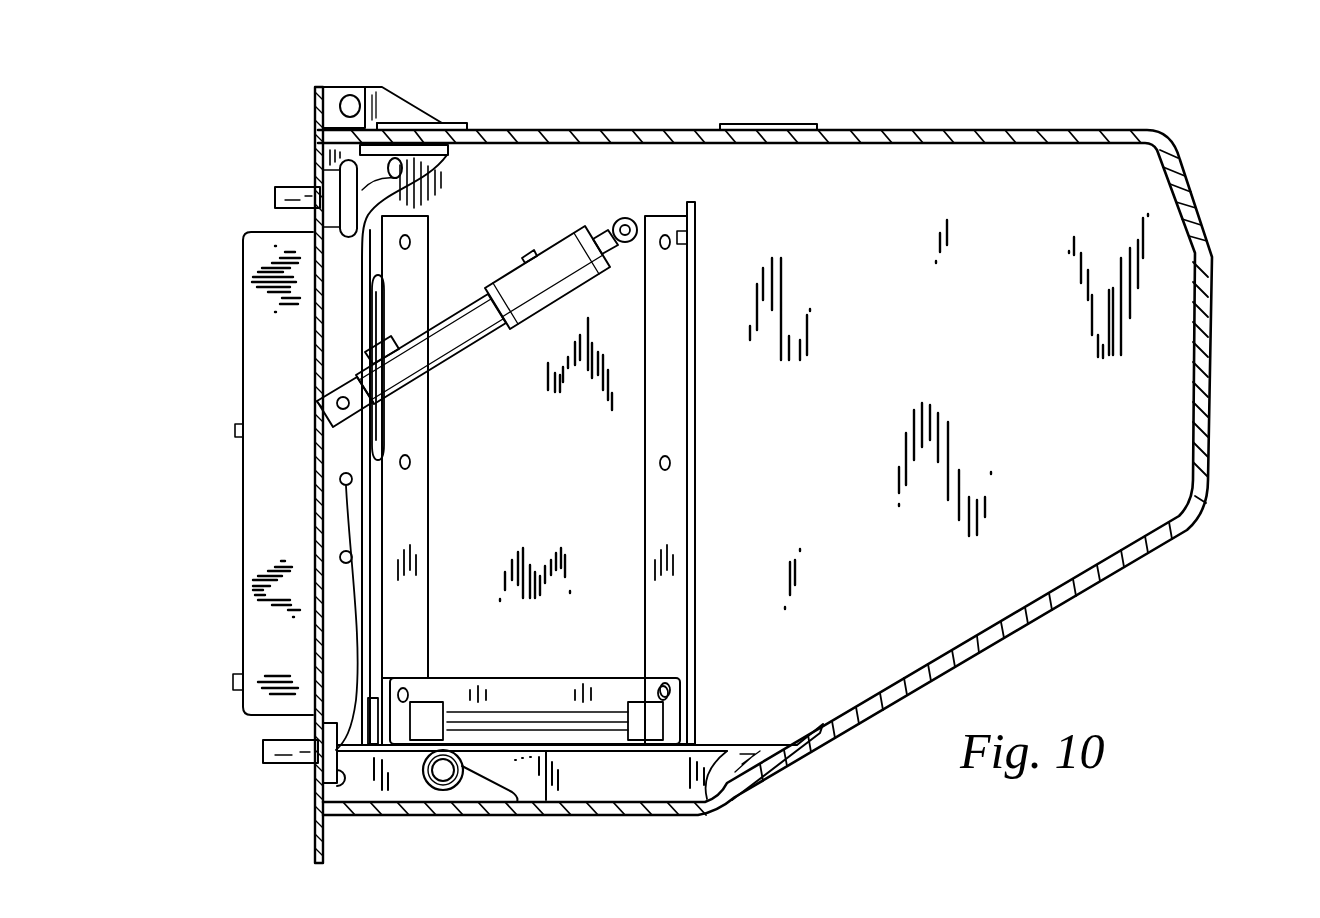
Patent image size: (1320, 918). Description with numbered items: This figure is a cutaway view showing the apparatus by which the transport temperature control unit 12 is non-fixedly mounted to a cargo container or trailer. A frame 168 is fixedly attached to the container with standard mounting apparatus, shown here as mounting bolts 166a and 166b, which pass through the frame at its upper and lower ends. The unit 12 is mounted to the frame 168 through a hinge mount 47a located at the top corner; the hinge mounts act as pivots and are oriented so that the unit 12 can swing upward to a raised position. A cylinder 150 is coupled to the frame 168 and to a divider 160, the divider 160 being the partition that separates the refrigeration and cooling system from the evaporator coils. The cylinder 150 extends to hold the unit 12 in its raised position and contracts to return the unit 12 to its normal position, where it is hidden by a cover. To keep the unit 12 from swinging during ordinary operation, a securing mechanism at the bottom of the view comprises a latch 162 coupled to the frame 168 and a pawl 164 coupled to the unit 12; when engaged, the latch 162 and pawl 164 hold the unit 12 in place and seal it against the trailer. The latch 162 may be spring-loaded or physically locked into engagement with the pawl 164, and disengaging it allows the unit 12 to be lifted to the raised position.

The transport temperature control unit 12 is at (1243, 87).
The hinge mount 47a is at (362, 88).
The cylinder 150 is at (553, 246).
The divider 160 is at (570, 480).
The latch 162 is at (494, 792).
The pawl 164 is at (443, 790).
The mounting bolt 166a is at (275, 193).
The mounting bolt 166b is at (263, 750).
The frame 168 is at (333, 327).